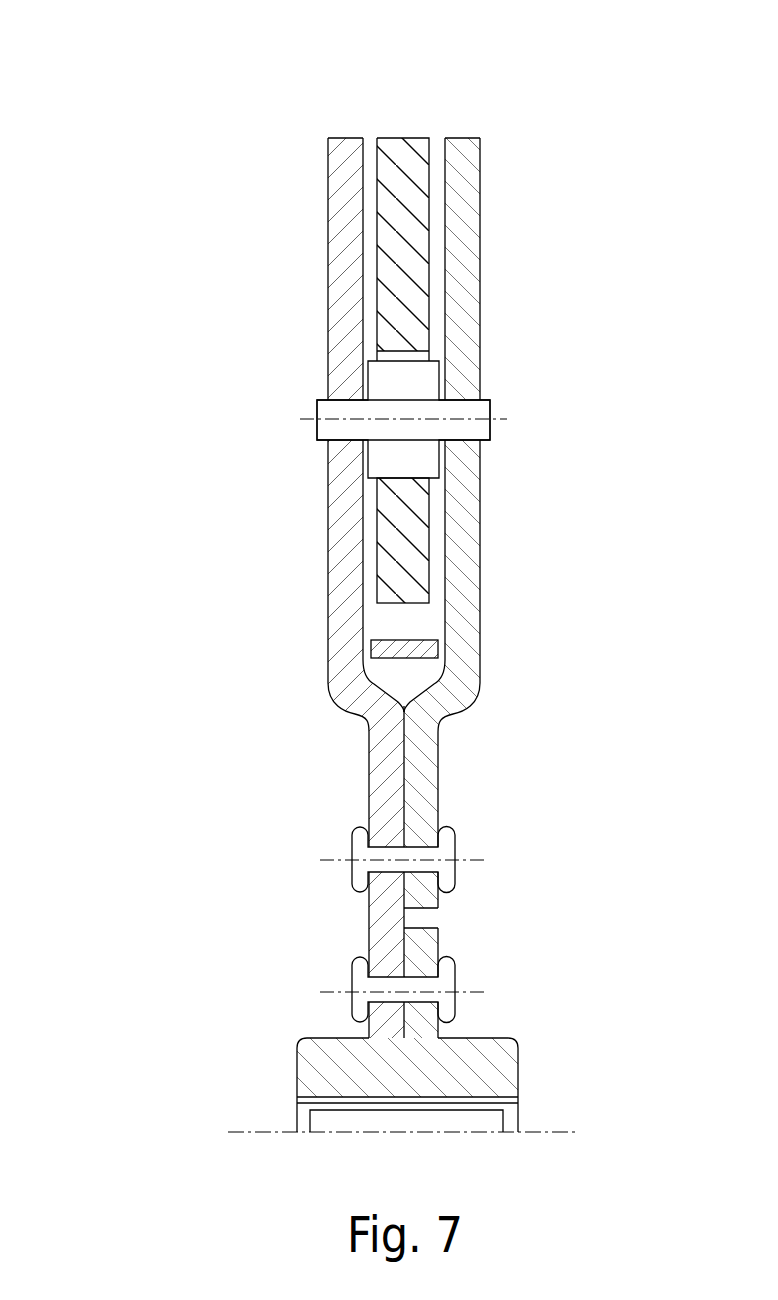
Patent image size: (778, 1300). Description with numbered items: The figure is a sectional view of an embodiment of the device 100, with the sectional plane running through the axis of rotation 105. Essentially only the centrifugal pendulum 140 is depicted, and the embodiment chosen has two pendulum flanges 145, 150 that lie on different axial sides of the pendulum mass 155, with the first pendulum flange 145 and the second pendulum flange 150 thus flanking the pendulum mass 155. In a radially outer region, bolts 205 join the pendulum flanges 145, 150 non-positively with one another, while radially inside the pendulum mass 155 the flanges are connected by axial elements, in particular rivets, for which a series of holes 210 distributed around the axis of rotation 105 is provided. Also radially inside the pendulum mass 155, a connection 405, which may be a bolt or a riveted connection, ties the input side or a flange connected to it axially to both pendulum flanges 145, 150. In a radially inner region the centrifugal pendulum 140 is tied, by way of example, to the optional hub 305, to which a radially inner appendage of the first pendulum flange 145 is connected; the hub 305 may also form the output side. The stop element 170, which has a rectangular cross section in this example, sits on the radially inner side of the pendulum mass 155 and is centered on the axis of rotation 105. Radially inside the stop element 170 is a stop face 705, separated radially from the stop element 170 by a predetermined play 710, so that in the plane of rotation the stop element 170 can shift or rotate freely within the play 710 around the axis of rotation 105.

The device 100 is at (160, 72).
The centrifugal pendulum 140 is at (412, 82).
The first pendulum flange 145 is at (348, 186).
The second pendulum flange 150 is at (457, 221).
The pendulum mass 155 is at (404, 263).
The bolts 205 is at (490, 405).
The holes 210 is at (497, 449).
The stop element 170 is at (428, 628).
The stop face 705 is at (430, 676).
The play 710 is at (384, 673).
The connection 405 is at (489, 847).
The hub 305 is at (502, 1057).
The axis of rotation 105 is at (565, 1132).